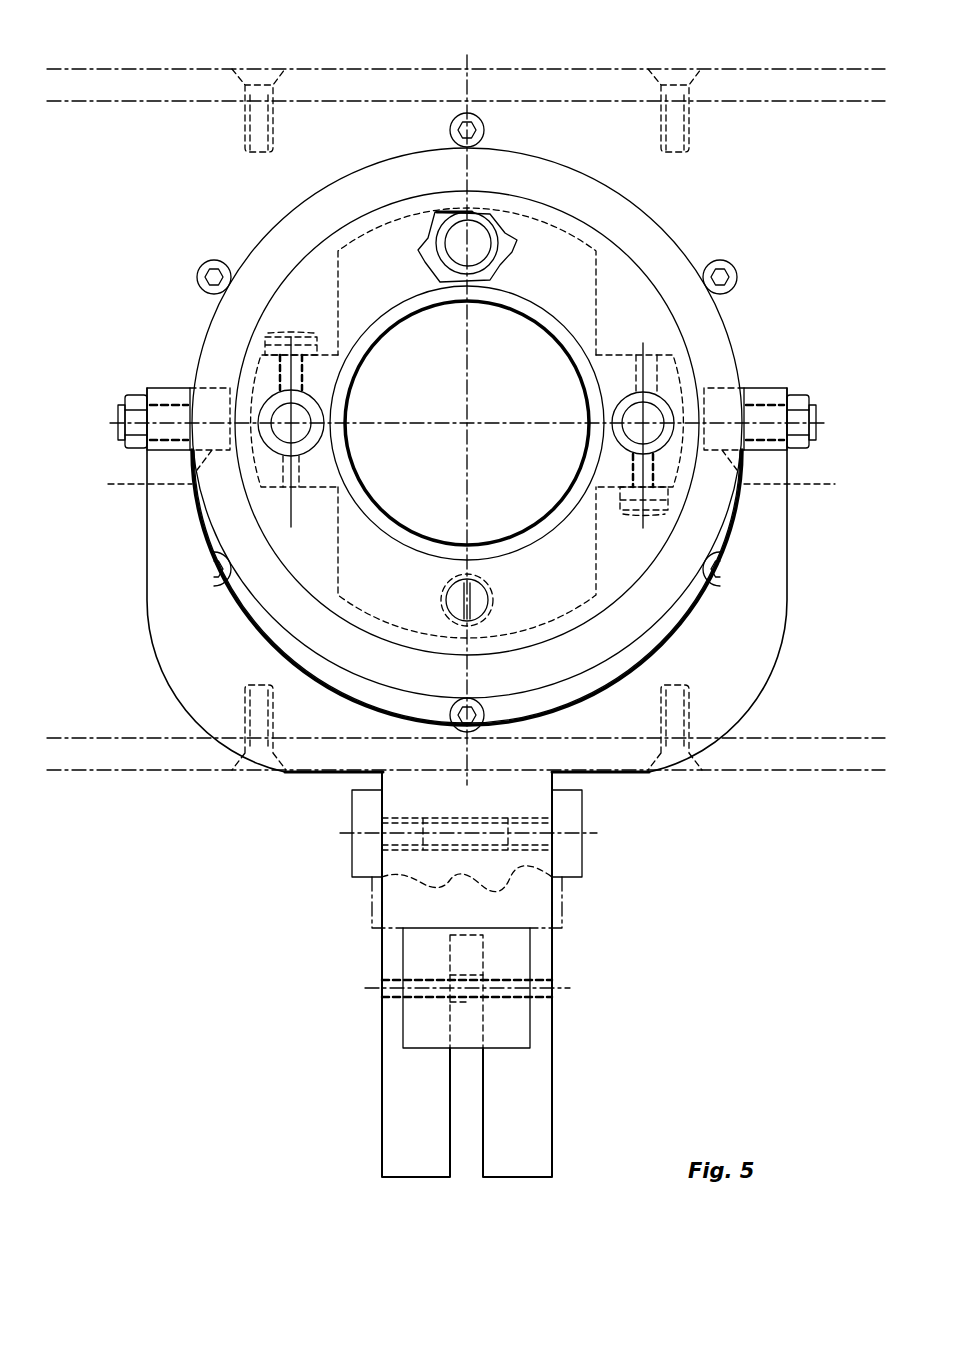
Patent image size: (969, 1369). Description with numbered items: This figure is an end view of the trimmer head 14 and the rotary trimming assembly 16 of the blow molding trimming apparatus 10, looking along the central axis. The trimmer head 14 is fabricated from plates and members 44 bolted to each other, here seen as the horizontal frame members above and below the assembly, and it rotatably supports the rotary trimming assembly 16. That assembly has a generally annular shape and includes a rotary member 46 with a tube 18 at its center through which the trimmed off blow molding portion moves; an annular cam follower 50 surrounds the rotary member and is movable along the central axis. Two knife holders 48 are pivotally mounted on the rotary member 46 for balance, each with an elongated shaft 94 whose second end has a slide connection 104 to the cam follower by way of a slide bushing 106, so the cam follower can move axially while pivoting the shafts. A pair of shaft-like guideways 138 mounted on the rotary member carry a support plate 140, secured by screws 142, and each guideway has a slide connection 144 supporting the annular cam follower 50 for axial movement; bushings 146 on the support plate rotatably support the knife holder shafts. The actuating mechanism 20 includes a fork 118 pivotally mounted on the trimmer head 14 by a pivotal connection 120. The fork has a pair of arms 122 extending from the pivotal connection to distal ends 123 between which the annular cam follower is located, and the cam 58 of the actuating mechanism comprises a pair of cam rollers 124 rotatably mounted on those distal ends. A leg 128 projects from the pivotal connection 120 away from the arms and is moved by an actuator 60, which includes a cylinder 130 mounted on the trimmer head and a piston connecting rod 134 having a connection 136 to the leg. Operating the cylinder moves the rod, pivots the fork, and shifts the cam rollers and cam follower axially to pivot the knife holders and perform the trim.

The apparatus 10 is at (218, 922).
The trimmer head 14 is at (97, 773).
The rotary trimming assembly 16 is at (788, 212).
The tube 18 is at (582, 340).
The actuating mechanism 20 is at (352, 883).
The plates and members 44 is at (205, 68).
The rotary member 46 is at (393, 303).
The knife holder 48 is at (314, 437).
The annular cam follower 50 is at (653, 210).
The cam 58 is at (191, 378).
The actuator 60 is at (532, 965).
The elongated shaft 94 is at (308, 410).
The slide connection 104 is at (316, 400).
The slide bushing 106 is at (305, 448).
The fork 118 is at (593, 775).
The pivotal connection 120 is at (572, 848).
The arms 122 is at (147, 603).
The distal ends 123 is at (135, 395).
The cam rollers 124 is at (474, 486).
The leg 128 is at (553, 1040).
The cylinder 130 is at (525, 1007).
The piston connecting rod 134 is at (450, 1002).
The connection 136 is at (448, 985).
The guideways 138 is at (495, 245).
The support plate 140 is at (592, 228).
The screws 142 is at (490, 583).
The slide connection 144 is at (424, 243).
The bushings 146 is at (630, 448).